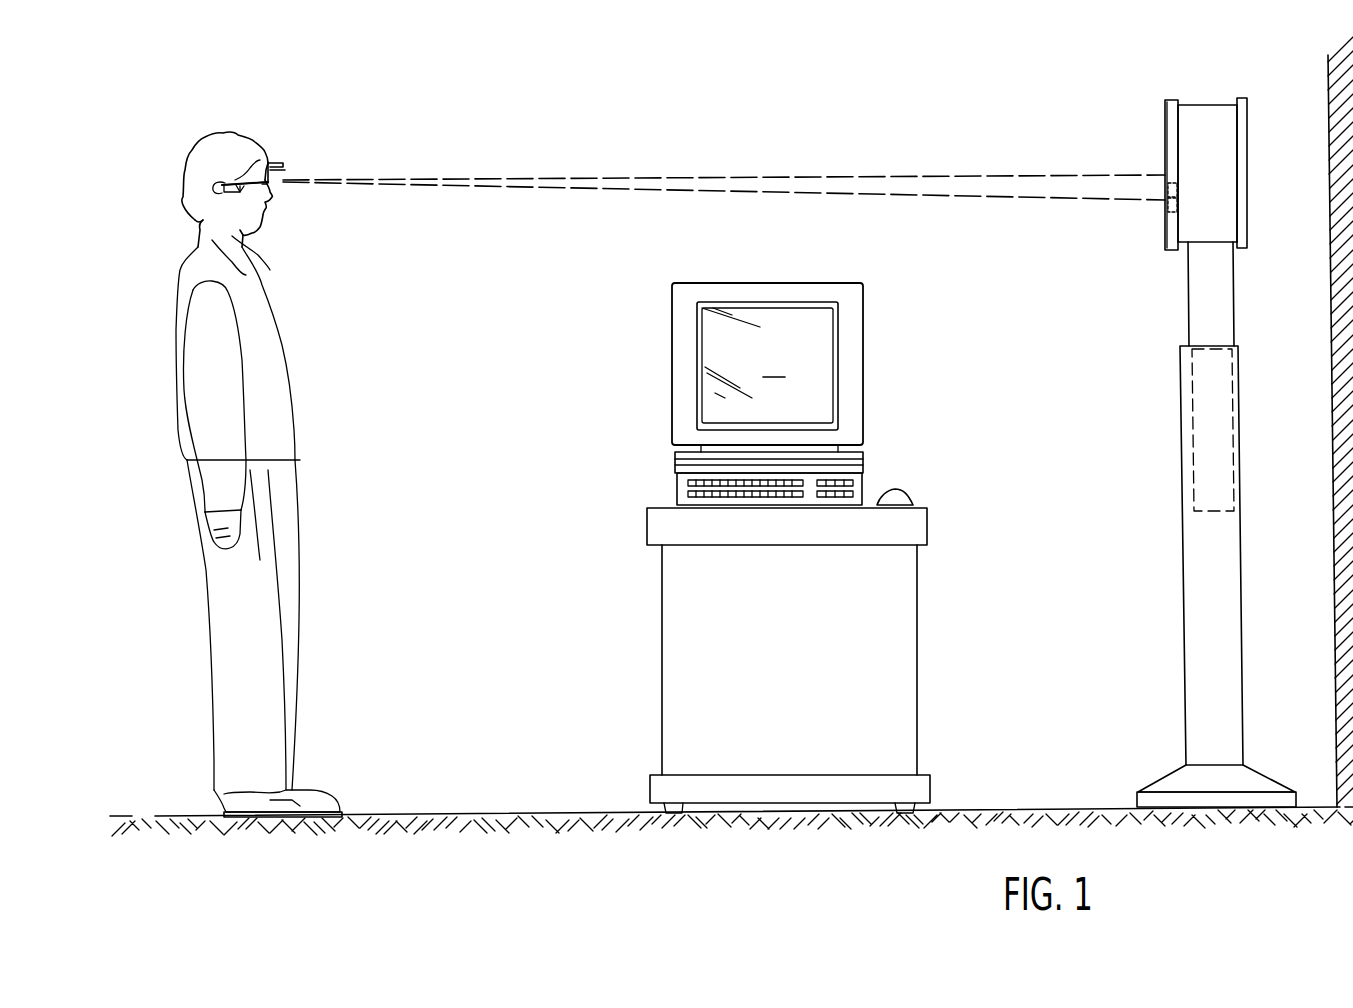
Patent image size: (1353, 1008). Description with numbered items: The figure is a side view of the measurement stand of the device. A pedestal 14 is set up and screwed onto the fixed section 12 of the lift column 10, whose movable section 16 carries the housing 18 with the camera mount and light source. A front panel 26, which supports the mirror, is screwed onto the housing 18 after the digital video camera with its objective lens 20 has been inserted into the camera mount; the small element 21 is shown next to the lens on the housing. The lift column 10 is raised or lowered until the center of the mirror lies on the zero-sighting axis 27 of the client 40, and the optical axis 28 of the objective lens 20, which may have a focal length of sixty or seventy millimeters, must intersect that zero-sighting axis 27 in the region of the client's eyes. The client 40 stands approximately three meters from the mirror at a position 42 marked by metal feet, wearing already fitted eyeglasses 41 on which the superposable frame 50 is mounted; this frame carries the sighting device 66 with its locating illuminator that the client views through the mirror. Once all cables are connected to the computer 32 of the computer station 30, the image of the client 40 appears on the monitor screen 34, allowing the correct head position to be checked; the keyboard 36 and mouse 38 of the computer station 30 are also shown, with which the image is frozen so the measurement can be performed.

The lift column 10 is at (1196, 435).
The fixed section of the lift column 12 is at (1253, 555).
The pedestal 14 is at (1232, 757).
The movable section of the lift column 16 is at (1256, 294).
The housing 18 is at (1244, 177).
The objective lens 20 is at (1127, 221).
The sensor 21 is at (1130, 259).
The front panel 26 is at (1118, 155).
The zero-sighting axis 27 is at (724, 131).
The optical axis 28 is at (724, 229).
The computer station 30 is at (735, 660).
The computer 32 is at (723, 447).
The monitor screen 34 is at (767, 367).
The keyboard 36 is at (721, 487).
The mouse 38 is at (934, 461).
The client 40 is at (277, 472).
The eyeglasses 41 is at (303, 217).
The position 42 is at (316, 786).
The superposable frame 50 is at (322, 152).
The sighting device 66 is at (283, 127).